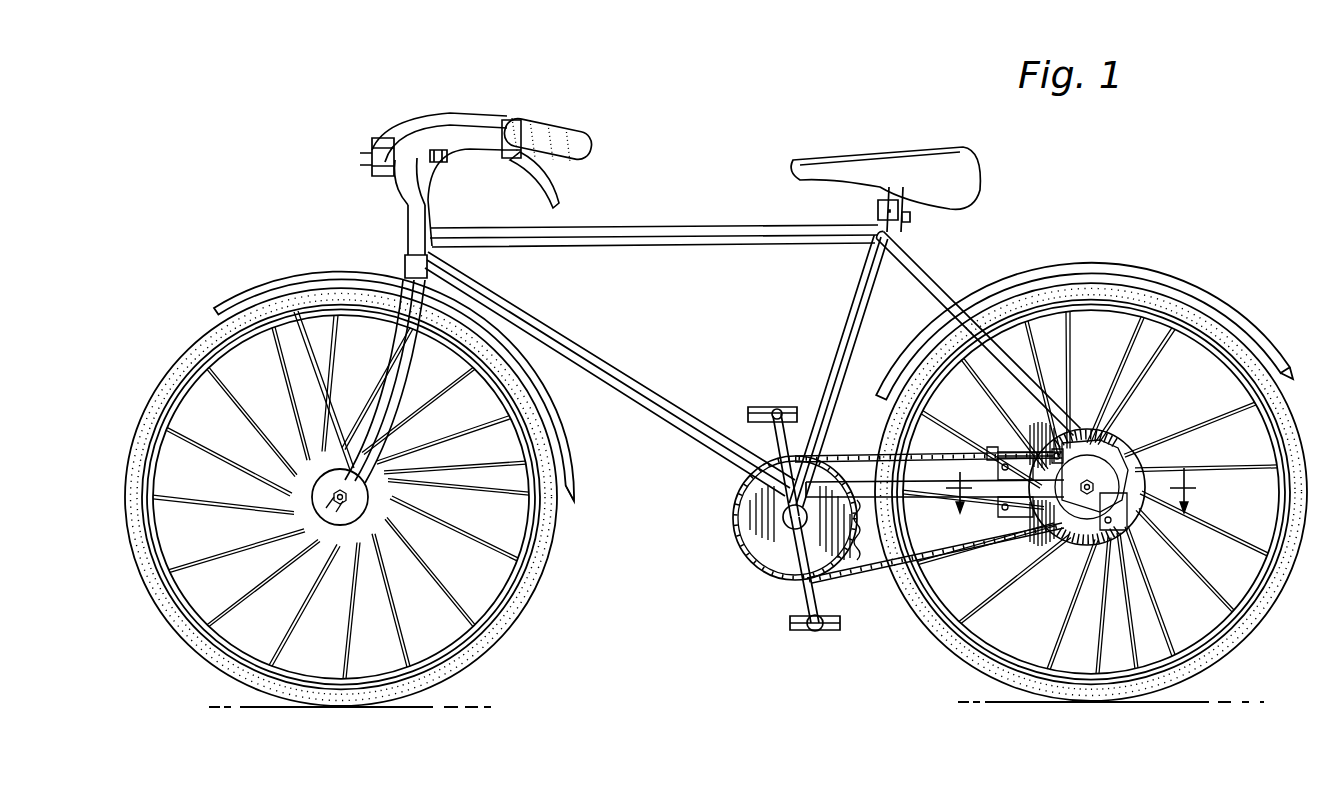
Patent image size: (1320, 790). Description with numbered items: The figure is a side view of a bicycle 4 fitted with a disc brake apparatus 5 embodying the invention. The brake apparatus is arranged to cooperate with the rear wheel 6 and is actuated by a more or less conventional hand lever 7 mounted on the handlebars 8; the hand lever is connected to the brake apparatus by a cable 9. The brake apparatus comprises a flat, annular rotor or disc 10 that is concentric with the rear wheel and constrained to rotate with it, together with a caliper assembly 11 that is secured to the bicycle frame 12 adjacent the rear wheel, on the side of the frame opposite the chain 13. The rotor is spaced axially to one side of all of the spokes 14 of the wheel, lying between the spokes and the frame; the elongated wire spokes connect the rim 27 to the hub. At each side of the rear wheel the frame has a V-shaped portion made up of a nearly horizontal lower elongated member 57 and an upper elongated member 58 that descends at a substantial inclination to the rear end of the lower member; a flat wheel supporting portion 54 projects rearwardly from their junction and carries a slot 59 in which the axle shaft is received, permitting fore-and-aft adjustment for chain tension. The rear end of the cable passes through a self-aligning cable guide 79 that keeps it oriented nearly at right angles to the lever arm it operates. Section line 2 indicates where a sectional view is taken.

The section line 2- 2 is at (1078, 493).
The bicycle 4 is at (720, 372).
The disc brake apparatus 5 is at (1165, 527).
The rear wheel 6 is at (1255, 633).
The hand lever 7 is at (553, 196).
The handlebars 8 is at (572, 141).
The cable 9 is at (662, 415).
The rotor 10 is at (1108, 432).
The caliper assembly 11 is at (1022, 518).
The bicycle frame 12 is at (979, 328).
The chain 13 is at (842, 578).
The spokes 14 is at (1199, 374).
The rim 27 is at (1008, 650).
The wheel supporting portion 54 is at (1124, 448).
The lower elongated member 57 is at (918, 484).
The upper elongated member 58 is at (947, 298).
The slot 59 is at (1165, 464).
The self-aligning cable guide 79 is at (992, 450).